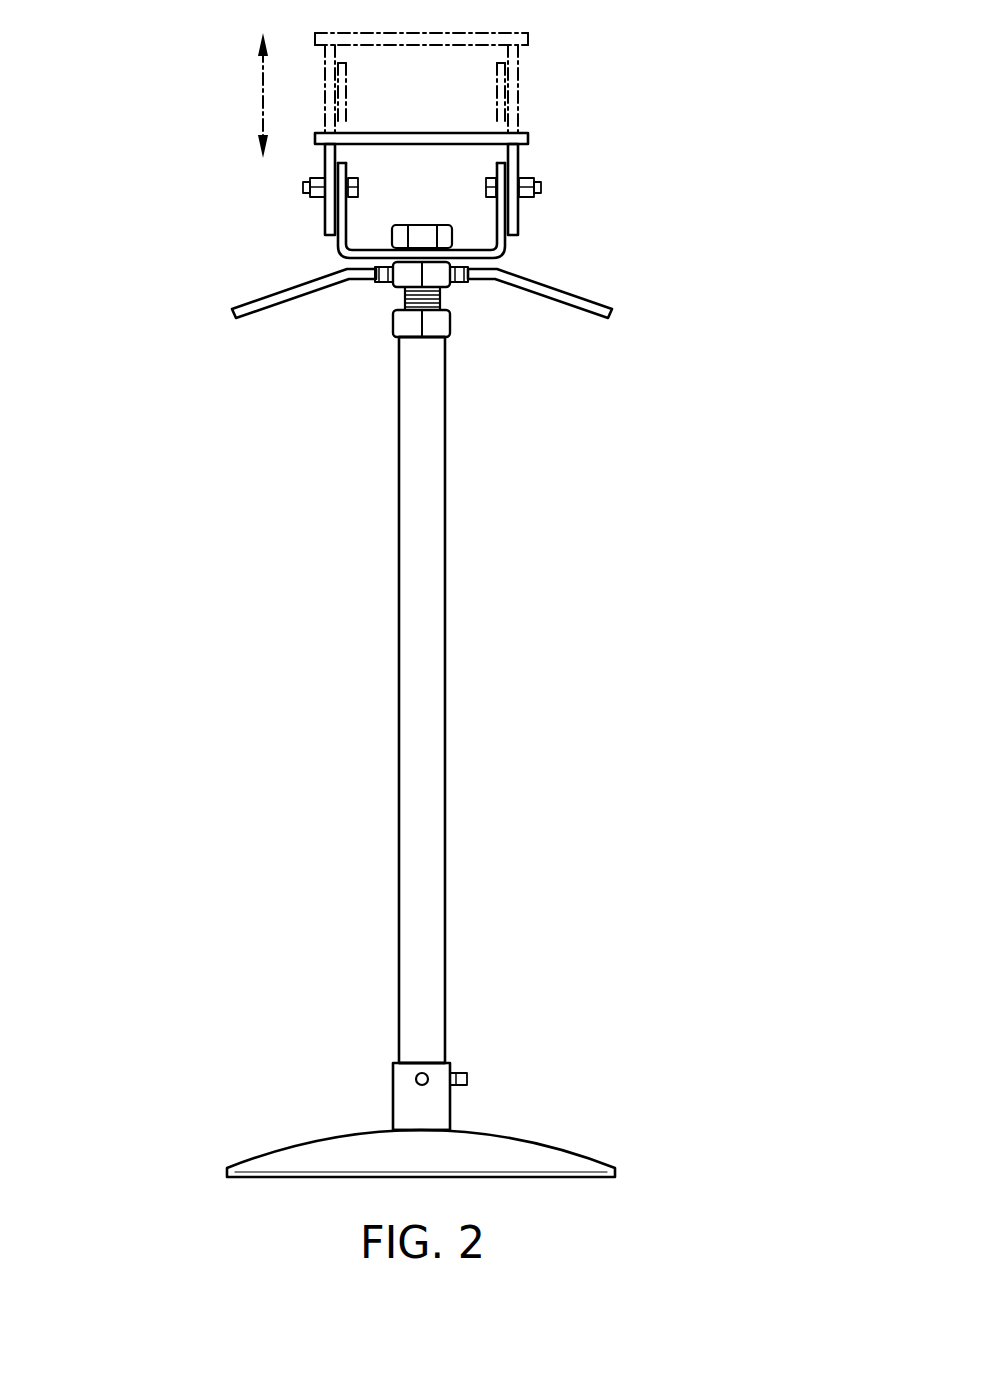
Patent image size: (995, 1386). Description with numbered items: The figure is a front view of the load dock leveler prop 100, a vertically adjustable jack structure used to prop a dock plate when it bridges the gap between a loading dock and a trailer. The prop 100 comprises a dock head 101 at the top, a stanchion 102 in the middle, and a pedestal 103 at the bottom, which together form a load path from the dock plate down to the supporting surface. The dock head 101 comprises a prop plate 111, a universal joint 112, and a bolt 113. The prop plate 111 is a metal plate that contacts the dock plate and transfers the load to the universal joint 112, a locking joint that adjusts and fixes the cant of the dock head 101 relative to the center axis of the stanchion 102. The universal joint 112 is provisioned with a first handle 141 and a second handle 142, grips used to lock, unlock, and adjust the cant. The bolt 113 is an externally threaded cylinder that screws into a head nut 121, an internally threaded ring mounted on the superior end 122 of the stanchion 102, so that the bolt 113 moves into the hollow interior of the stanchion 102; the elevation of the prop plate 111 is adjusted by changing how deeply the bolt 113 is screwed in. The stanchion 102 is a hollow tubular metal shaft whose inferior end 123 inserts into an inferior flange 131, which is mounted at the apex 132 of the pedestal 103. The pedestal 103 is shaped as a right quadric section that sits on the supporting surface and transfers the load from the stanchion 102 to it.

The load dock leveler prop 100 is at (140, 92).
The dock head 101 is at (528, 152).
The prop plate 111 is at (421, 133).
The universal joint 112 is at (333, 211).
The bolt 113 is at (405, 298).
The head nut 121 is at (447, 327).
The superior end 122 is at (438, 340).
The stanchion 102 is at (420, 782).
The inferior end 123 is at (440, 1057).
The inferior flange 131 is at (433, 1105).
The apex 132 is at (417, 1128).
The pedestal 103 is at (550, 1160).
The first handle 141 is at (547, 287).
The second handle 142 is at (255, 307).